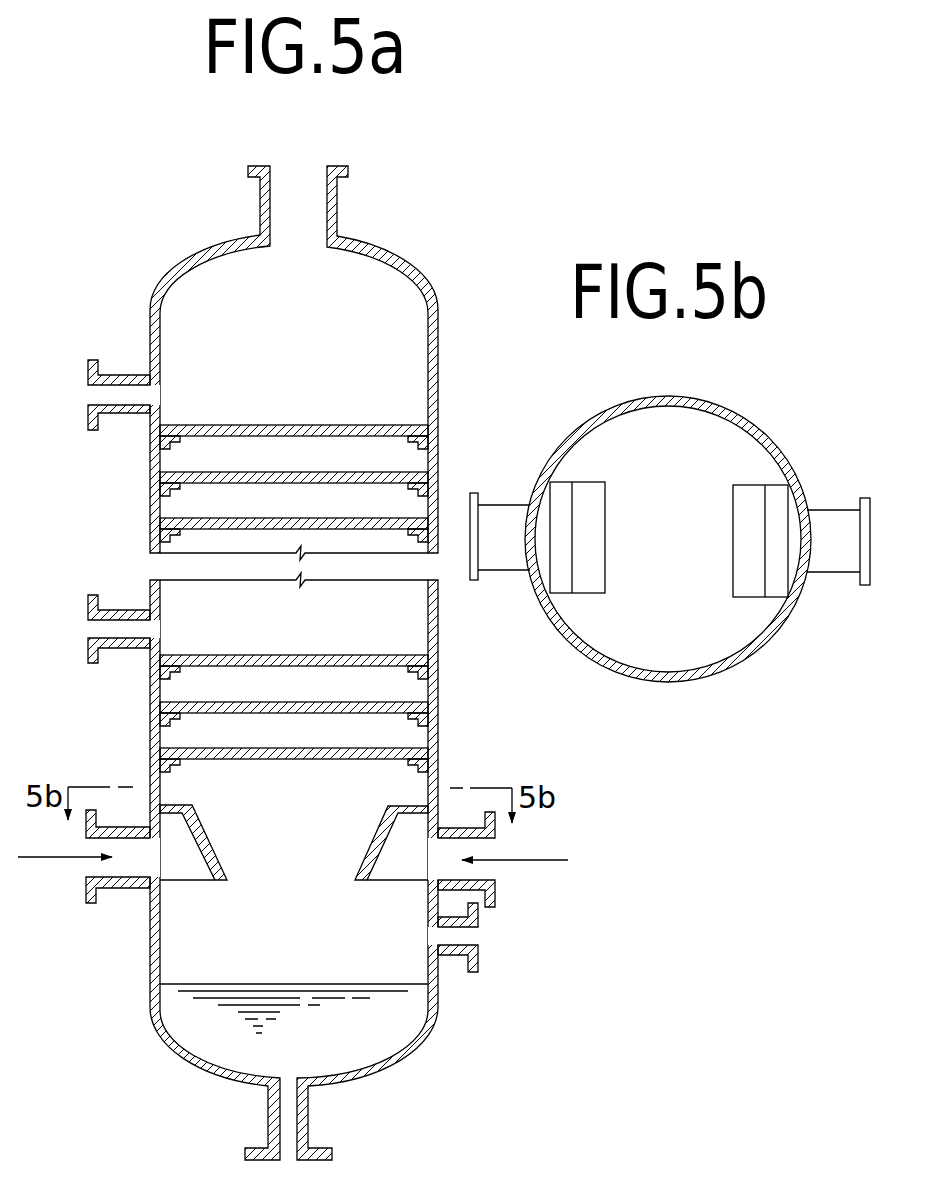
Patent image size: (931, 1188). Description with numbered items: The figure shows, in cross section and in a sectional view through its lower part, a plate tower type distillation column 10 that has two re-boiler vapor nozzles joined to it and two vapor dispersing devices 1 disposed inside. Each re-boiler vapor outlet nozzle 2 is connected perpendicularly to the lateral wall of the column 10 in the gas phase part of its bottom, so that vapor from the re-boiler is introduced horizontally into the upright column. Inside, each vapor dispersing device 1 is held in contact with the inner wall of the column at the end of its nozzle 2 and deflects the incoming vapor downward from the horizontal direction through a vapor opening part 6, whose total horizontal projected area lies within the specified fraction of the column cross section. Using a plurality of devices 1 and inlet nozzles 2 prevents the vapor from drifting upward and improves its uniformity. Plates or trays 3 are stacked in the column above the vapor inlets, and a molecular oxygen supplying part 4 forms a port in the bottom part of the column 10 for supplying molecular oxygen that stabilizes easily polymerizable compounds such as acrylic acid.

In FIG. 5A, the vapor dispersing device 1 is at (222, 832).
In FIG. 5B, the vapor dispersing device 1 is at (618, 493).
In FIG. 5A, the re-boiler vapor outlet nozzle 2 is at (87, 841).
In FIG. 5B, the re-boiler vapor outlet nozzle 2 is at (508, 503).
In FIG. 5A, the tray 3 is at (348, 668).
In FIG. 5A, the molecular oxygen supplying part 4 is at (477, 935).
In FIG. 5A, the vapor opening part 6 is at (190, 881).
In FIG. 5A, the distillation column 10 is at (440, 368).
In FIG. 5B, the distillation column 10 is at (668, 539).